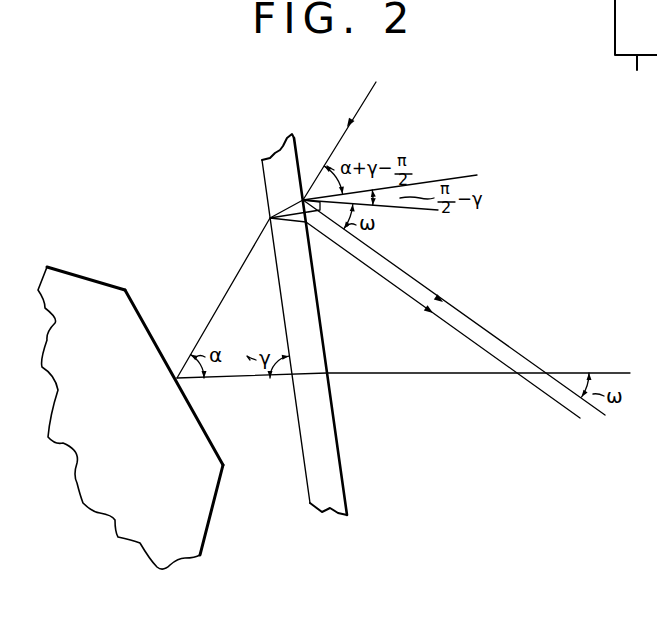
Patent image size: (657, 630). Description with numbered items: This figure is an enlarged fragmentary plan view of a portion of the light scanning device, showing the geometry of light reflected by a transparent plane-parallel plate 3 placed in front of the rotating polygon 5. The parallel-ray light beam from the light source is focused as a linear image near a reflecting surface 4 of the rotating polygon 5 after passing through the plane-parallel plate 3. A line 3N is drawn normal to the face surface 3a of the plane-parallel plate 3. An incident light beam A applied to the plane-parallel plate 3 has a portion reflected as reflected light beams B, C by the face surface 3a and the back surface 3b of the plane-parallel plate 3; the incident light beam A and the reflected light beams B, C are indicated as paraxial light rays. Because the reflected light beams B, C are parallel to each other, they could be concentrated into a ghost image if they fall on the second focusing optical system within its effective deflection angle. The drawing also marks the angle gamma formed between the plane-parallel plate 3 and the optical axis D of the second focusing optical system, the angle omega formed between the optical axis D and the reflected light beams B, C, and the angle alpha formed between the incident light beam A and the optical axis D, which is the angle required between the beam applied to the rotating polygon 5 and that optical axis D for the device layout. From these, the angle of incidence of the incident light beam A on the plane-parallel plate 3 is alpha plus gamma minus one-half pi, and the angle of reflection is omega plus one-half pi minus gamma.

The plane-parallel plate 3 is at (279, 308).
The face surface of the plane-parallel plate 3a is at (302, 166).
The back surface of the plane-parallel plate 3b is at (262, 181).
The normal line 3N is at (452, 176).
The reflecting surface 4 is at (155, 335).
The rotating polygon 5 is at (130, 400).
The incident light beam A is at (364, 118).
The reflected light beam B is at (512, 349).
The reflected light beam C is at (551, 398).
The optical axis D is at (422, 374).